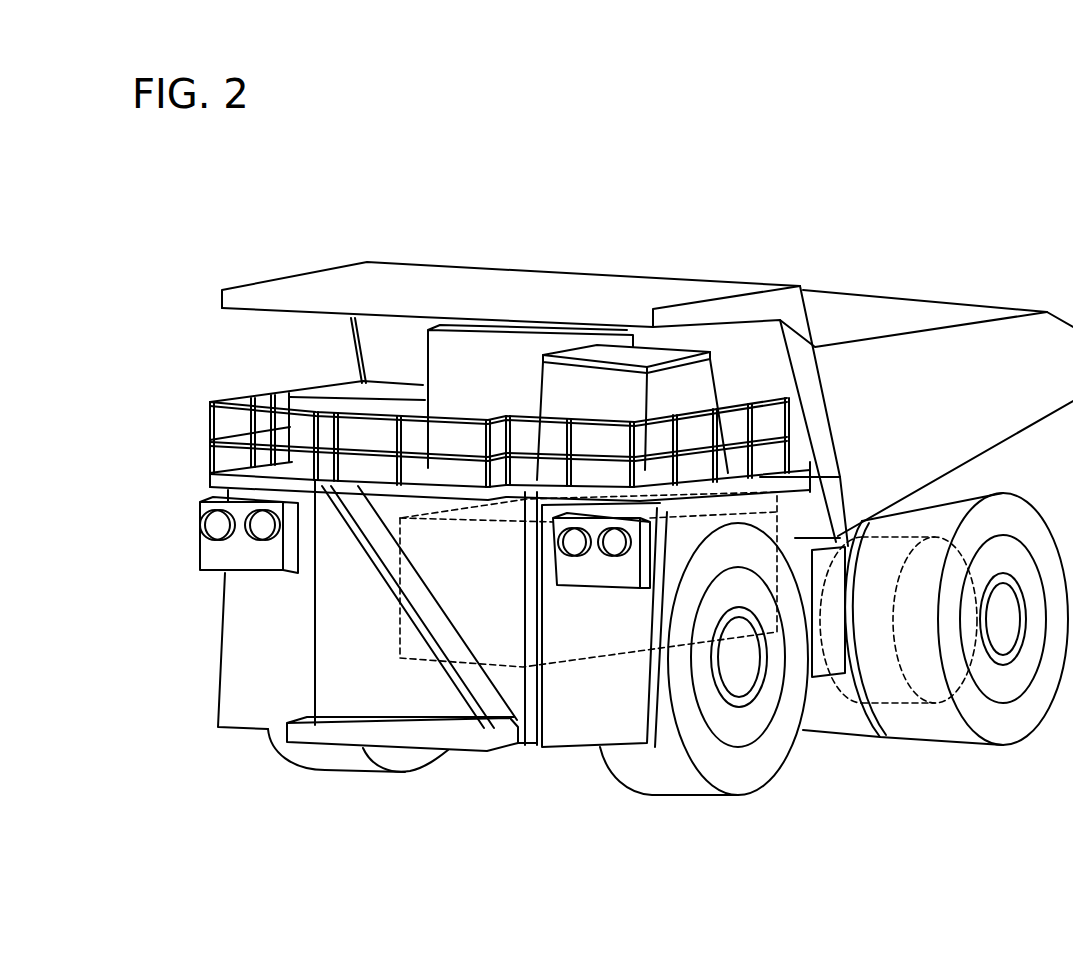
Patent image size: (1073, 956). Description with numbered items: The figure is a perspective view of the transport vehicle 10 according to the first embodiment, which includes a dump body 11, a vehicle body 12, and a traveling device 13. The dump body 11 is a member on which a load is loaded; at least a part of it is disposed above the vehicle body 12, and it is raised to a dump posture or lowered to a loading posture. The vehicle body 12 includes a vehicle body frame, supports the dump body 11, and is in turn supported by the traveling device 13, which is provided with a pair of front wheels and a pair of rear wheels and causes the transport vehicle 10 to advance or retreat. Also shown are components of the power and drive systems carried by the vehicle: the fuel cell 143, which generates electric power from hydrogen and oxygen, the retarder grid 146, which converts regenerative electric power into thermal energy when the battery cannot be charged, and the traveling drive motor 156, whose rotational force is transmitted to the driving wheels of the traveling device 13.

The transport vehicle 10 is at (912, 190).
The dump body 11 is at (880, 298).
The vehicle body 12 is at (235, 661).
The traveling device 13 is at (937, 730).
The fuel cell 143 is at (587, 658).
The retarder grid 146 is at (355, 393).
The traveling drive motor 156 is at (897, 712).